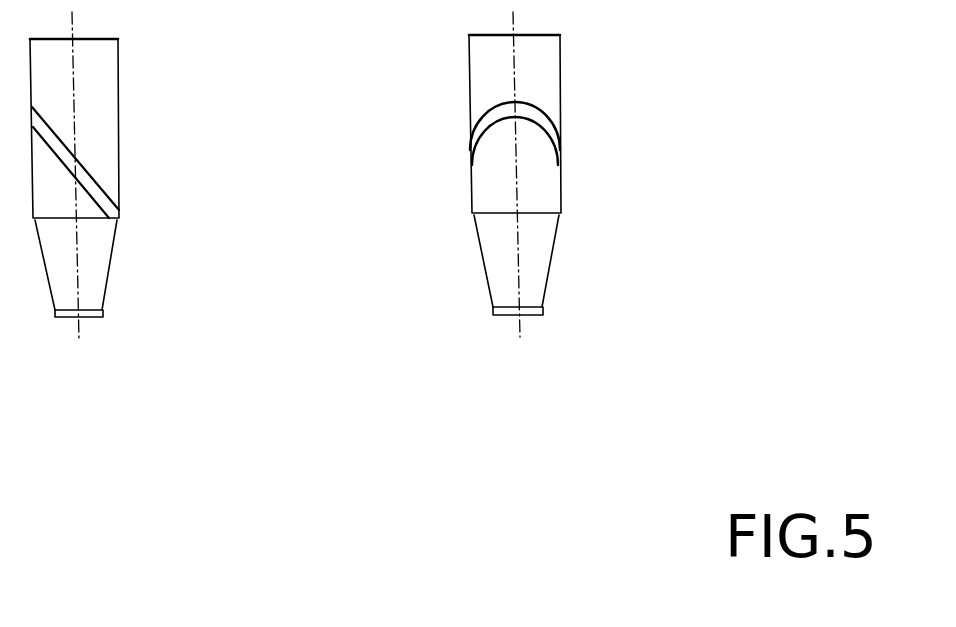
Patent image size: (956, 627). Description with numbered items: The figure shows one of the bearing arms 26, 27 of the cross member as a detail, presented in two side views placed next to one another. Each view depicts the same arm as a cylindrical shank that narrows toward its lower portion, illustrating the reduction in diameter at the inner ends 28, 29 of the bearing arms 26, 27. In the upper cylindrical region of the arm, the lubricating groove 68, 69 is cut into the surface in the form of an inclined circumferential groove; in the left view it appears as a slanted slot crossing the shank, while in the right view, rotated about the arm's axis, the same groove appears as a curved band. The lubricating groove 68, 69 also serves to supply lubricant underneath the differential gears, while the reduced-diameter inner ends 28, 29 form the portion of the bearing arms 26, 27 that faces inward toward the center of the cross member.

The bearing arm 26 is at (348, 116).
The bearing arm 27 is at (120, 62).
The lubricating groove 68 is at (356, 160).
The lubricating groove 69 is at (93, 185).
The inner end 28 is at (354, 266).
The inner end 29 is at (95, 300).